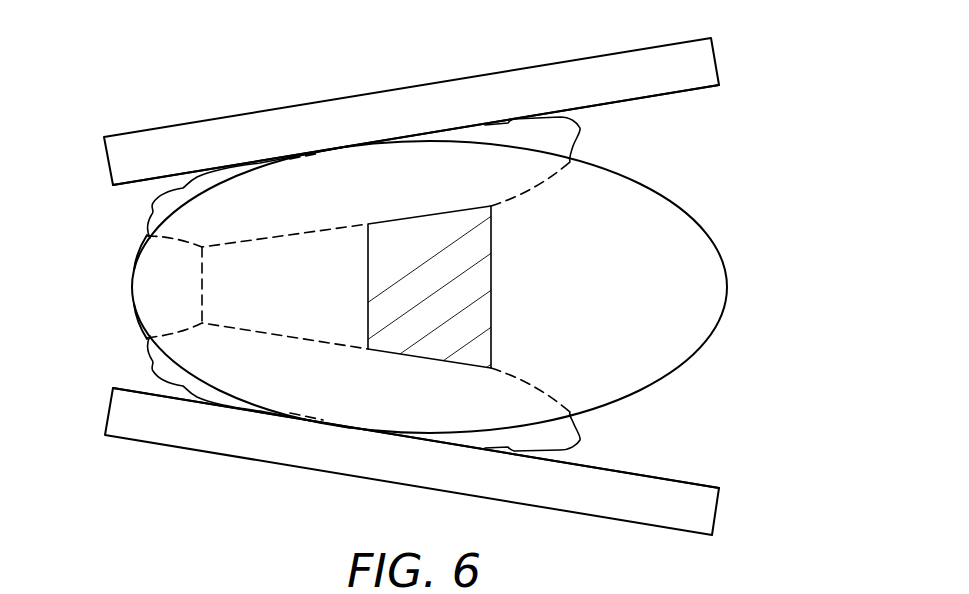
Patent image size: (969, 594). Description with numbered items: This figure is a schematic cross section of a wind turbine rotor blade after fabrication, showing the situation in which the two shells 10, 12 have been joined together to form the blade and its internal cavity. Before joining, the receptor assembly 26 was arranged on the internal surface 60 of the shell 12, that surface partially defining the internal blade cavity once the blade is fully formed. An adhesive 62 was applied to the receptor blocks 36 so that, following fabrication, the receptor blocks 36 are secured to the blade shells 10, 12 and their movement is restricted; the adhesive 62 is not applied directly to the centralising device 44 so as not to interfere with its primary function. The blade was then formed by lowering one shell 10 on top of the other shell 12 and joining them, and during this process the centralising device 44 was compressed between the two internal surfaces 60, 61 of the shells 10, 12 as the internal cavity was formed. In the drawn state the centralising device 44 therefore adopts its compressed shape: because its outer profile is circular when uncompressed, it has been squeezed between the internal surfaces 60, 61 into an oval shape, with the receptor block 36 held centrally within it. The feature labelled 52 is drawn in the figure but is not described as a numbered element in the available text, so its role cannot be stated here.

The shell 10 is at (719, 63).
The shell 12 is at (716, 507).
The internal surface 61 is at (688, 97).
The internal surface 60 is at (689, 476).
The centralising device 44 is at (700, 220).
The receptor block 36 is at (500, 288).
The adhesive 62 is at (580, 130).
The outer surface 52 is at (104, 266).
The receptor assembly 26 is at (104, 308).